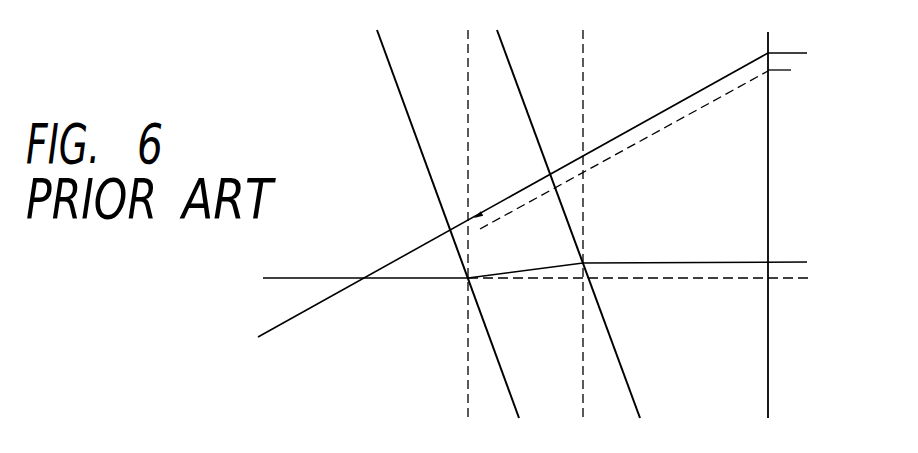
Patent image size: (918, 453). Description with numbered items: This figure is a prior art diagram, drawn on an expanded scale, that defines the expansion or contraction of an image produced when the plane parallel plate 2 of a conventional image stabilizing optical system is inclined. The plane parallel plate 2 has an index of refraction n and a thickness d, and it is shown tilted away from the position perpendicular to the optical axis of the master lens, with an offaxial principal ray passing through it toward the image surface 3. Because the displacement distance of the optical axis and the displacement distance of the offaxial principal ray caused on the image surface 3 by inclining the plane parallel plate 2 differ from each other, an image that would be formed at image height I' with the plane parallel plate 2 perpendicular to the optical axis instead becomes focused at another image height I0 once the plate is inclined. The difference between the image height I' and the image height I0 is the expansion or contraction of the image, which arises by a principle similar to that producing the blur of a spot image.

The plane parallel plate 2 is at (396, 86).
The image surface 3 is at (768, 46).
The index of refraction n is at (525, 224).
The thickness d is at (597, 311).
The image height with inclined plate I0 is at (782, 278).
The image height with perpendicular plate I' is at (800, 158).